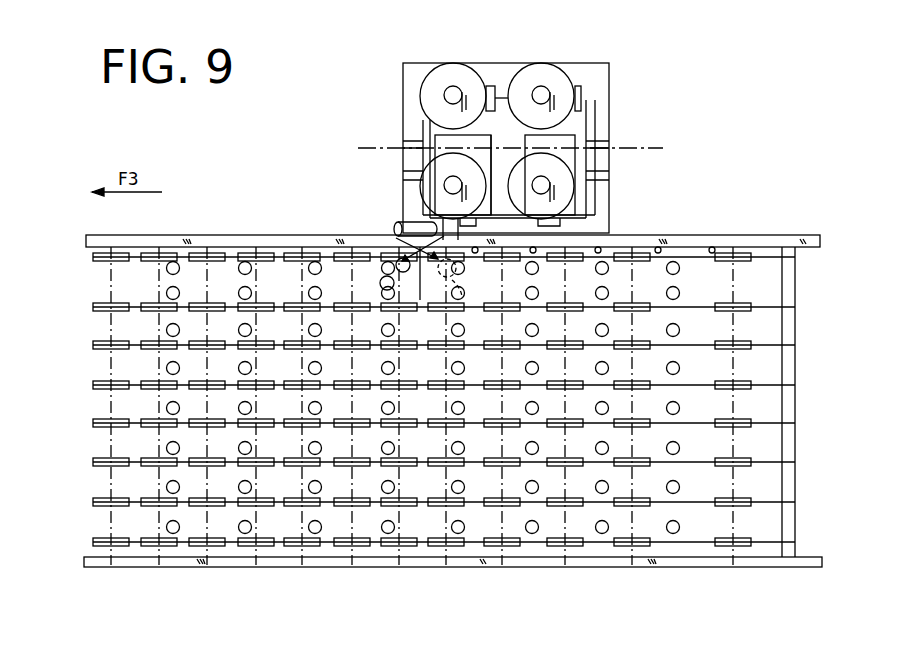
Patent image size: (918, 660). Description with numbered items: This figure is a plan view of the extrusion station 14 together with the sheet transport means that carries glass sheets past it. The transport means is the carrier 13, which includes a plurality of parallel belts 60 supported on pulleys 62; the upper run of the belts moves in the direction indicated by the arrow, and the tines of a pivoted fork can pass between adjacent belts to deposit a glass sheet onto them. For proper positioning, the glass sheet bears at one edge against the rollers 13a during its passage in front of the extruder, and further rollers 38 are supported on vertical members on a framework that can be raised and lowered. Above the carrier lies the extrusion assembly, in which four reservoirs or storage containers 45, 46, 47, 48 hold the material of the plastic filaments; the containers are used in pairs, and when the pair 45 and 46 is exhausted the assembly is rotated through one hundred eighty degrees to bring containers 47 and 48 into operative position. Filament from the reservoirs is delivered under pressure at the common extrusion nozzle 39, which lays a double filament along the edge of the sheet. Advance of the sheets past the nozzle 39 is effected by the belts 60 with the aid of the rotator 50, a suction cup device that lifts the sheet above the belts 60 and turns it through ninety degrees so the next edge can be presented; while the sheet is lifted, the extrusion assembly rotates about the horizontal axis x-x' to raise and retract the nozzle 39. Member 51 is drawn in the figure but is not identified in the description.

The carrier 13 is at (780, 230).
The rollers 13a is at (703, 246).
The extrusion station 14 is at (623, 118).
The rollers 38 is at (603, 287).
The extrusion nozzle 39 is at (395, 224).
The reservoir 45 is at (567, 193).
The reservoir 46 is at (430, 187).
The reservoir 47 is at (453, 75).
The reservoir 48 is at (550, 77).
The suction cup device 50 is at (393, 236).
The support member 51 is at (495, 213).
The belts 60 is at (277, 307).
The pulleys 62 is at (97, 345).